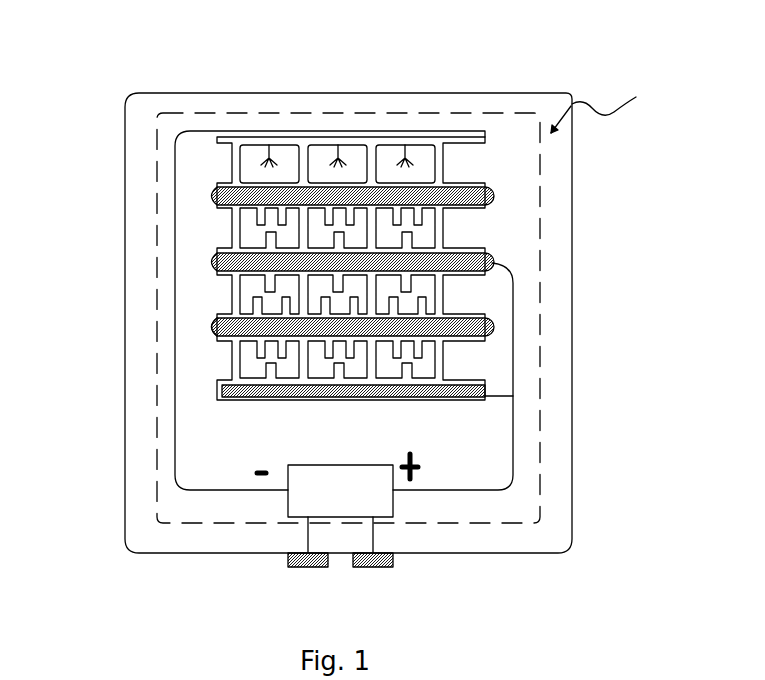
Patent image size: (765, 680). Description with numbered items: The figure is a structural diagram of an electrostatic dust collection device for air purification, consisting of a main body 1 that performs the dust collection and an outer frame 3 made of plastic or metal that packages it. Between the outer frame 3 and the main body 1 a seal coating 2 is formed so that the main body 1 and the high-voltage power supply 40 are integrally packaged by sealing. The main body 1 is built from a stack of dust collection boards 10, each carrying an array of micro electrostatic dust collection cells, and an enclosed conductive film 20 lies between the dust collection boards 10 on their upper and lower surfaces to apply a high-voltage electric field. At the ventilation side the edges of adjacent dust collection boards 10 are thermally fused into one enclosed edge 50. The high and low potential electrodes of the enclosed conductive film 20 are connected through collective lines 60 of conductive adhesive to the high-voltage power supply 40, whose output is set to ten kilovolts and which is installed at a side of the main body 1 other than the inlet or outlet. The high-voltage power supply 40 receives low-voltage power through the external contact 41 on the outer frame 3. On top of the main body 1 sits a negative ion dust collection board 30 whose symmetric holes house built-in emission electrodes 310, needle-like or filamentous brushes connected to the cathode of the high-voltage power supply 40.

The main body 1 is at (598, 104).
The seal coating 2 is at (540, 248).
The outer frame 3 is at (218, 93).
The dust collection board 10 is at (447, 295).
The enclosed conductive film 20 is at (490, 335).
The negative ion dust collection board 30 is at (418, 158).
The emission electrode 310 is at (338, 152).
The high-voltage power supply 40 is at (378, 500).
The external contact 41 is at (371, 565).
The enclosed edge 50 is at (210, 328).
The collective lines 60 is at (175, 295).